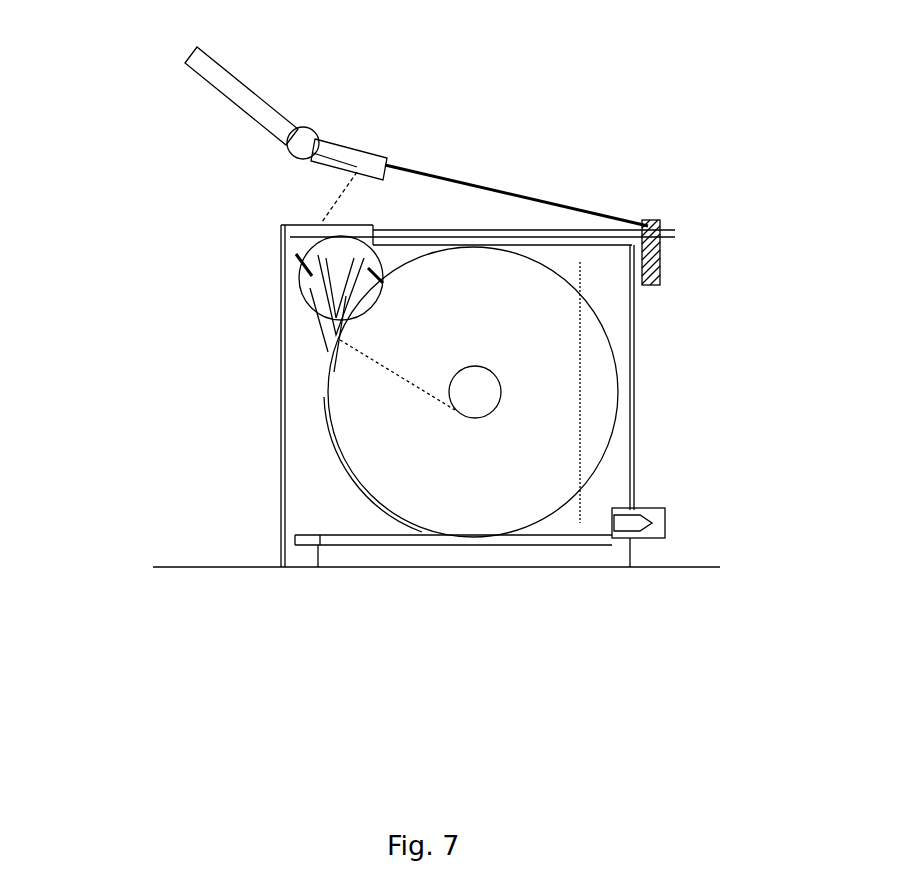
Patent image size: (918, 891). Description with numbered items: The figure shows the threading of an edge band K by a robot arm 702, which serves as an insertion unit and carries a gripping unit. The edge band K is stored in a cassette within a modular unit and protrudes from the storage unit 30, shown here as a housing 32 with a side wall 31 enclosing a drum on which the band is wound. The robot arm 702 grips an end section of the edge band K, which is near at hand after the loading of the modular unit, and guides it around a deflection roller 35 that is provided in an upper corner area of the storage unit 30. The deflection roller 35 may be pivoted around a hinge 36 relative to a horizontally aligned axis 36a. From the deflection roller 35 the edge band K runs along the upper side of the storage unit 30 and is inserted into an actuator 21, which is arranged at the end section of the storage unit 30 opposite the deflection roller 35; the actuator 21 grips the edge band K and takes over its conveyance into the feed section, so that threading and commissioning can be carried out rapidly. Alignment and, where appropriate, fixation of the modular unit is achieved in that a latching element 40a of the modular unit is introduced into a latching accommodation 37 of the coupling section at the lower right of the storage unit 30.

The robot arm 702 is at (263, 79).
The edge band K is at (443, 180).
The deflection roller 35 is at (312, 277).
The hinge 36 is at (333, 300).
The horizontally aligned axis 36a is at (333, 332).
The housing 32 is at (247, 445).
The side wall 31 is at (633, 353).
The storage unit 30 is at (721, 402).
The actuator 21 is at (660, 222).
The latching accommodation 37 is at (668, 518).
The latching element 40a is at (622, 517).